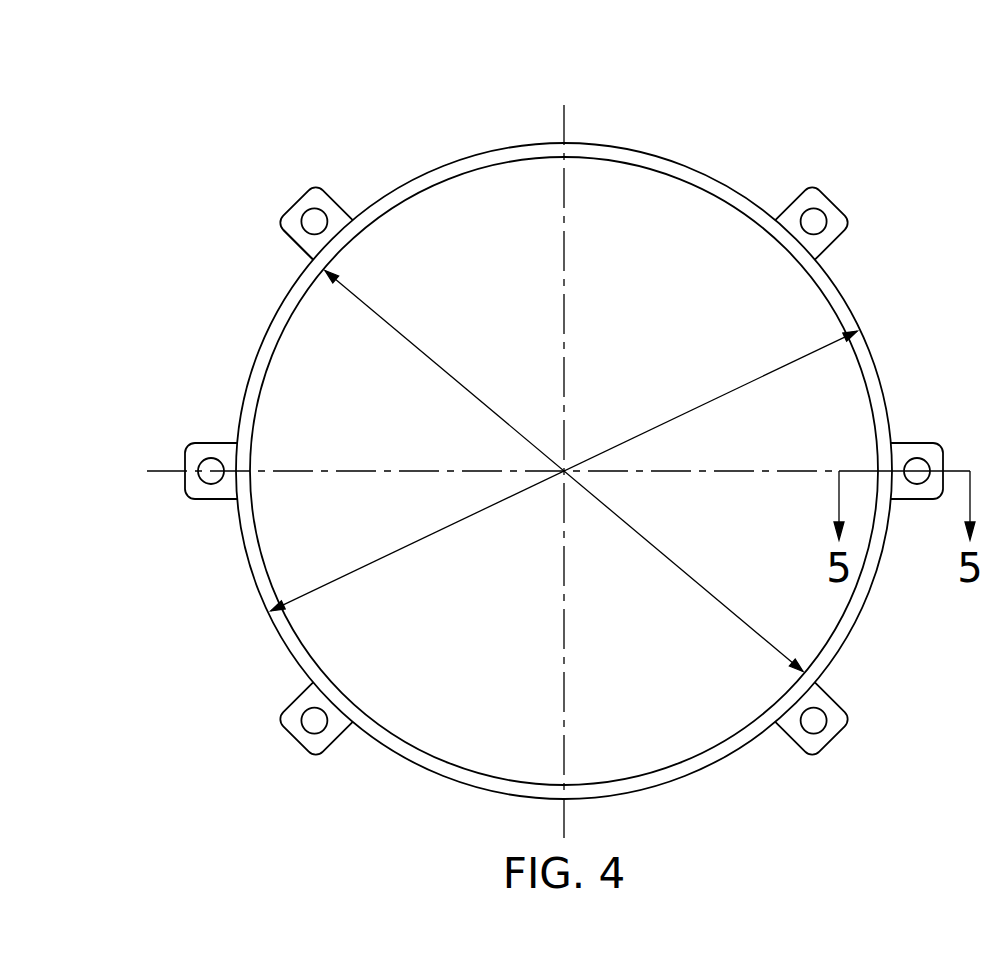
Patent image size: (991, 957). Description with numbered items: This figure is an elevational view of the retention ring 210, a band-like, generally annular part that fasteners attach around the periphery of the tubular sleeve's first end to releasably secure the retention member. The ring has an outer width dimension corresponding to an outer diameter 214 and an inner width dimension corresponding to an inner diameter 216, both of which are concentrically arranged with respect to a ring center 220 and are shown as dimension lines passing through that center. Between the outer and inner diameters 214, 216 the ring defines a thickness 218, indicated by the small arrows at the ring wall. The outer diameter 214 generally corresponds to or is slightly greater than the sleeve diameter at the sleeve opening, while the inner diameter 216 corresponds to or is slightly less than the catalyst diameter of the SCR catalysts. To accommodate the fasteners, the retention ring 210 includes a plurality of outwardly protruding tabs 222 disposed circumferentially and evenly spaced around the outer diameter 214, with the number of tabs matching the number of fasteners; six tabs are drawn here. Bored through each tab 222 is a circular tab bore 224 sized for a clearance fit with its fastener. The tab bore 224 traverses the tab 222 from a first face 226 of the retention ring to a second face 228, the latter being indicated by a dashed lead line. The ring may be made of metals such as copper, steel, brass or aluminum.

The retention ring 210 is at (243, 101).
The outer diameter 214 is at (700, 405).
The inner diameter 216 is at (446, 369).
The thickness 218 is at (282, 361).
The ring center 220 is at (572, 457).
The tab 222 is at (330, 203).
The tab bore 224 is at (280, 228).
The first face 226 is at (830, 216).
The second face 228 is at (787, 200).